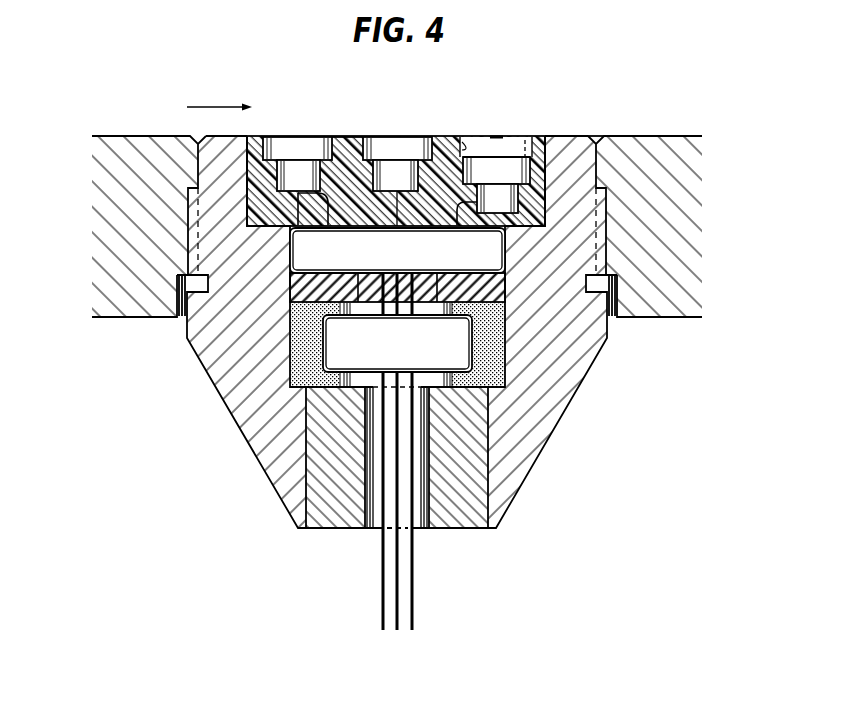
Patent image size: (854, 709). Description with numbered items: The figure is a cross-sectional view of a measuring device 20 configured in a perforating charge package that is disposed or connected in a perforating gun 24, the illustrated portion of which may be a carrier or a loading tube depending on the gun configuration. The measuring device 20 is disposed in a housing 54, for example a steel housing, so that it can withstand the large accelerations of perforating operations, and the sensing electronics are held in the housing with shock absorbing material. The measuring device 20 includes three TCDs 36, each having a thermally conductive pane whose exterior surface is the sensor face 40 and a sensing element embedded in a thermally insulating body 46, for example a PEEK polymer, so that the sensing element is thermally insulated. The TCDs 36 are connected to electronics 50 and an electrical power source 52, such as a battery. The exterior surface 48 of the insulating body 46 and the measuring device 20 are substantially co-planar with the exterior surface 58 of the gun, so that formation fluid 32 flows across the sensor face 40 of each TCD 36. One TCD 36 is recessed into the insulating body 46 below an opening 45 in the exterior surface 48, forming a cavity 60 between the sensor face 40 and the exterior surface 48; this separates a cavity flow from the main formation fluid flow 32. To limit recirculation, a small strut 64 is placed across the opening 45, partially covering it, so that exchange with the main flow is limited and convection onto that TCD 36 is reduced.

The measuring device 20 is at (634, 101).
The perforating gun 24 is at (677, 237).
The formation fluid 32 is at (208, 107).
The TCD 36 is at (301, 123).
The sensor face 40 is at (483, 157).
The opening 45 is at (460, 150).
The insulating body 46 is at (361, 201).
The exterior surface of the insulating body 48 is at (353, 136).
The electronics 50 is at (410, 263).
The electrical power source 52 is at (410, 361).
The housing 54 is at (571, 341).
The exterior surface of the gun 58 is at (650, 136).
The cavity 60 is at (520, 142).
The strut 64 is at (495, 134).